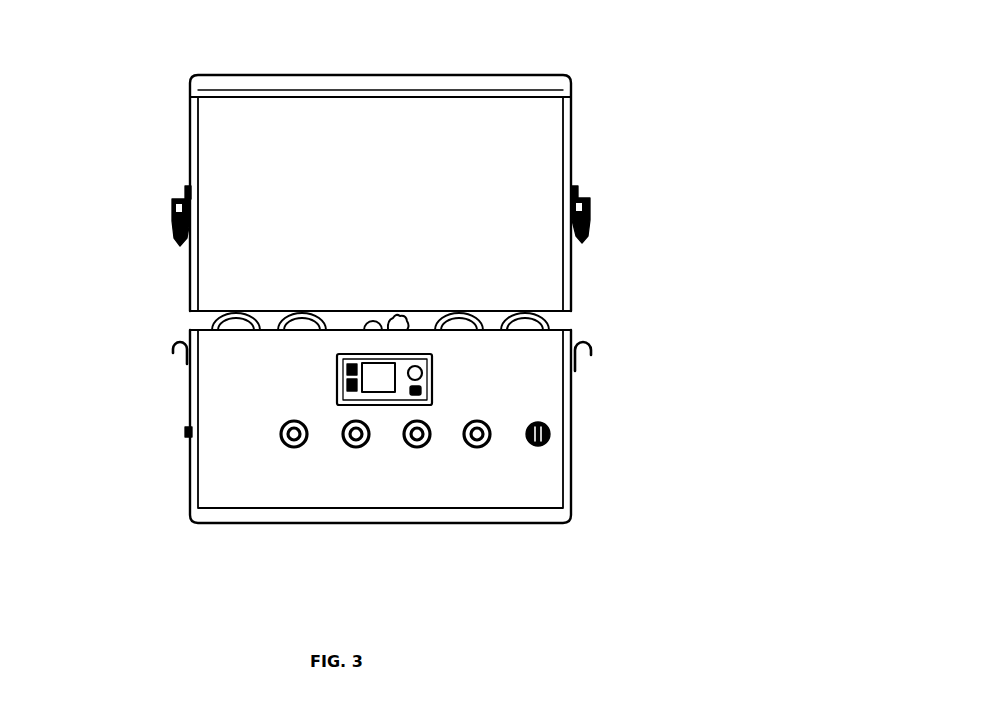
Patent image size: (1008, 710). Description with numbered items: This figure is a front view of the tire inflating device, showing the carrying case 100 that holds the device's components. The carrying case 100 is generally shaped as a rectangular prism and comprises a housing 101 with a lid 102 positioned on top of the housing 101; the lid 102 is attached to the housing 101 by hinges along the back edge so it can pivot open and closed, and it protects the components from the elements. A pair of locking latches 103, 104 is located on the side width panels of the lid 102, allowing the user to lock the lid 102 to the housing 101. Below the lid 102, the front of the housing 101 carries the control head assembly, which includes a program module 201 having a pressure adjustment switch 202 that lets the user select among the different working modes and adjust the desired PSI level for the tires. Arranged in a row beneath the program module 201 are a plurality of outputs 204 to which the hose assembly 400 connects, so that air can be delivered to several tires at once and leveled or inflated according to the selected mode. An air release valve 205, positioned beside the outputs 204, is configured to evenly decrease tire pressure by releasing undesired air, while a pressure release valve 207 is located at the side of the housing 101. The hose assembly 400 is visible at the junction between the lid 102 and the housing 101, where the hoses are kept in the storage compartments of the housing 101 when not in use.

The carrying case 100 is at (604, 78).
The housing 101 is at (543, 494).
The lid 102 is at (210, 148).
The locking latch 103 is at (592, 219).
The locking latch 104 is at (578, 360).
The program module 201 is at (408, 393).
The pressure adjustment switch 202 is at (338, 380).
The outputs 204 is at (284, 445).
The air release valve 205 is at (553, 434).
The pressure release valve 207 is at (188, 432).
The hose assembly 400 is at (210, 313).